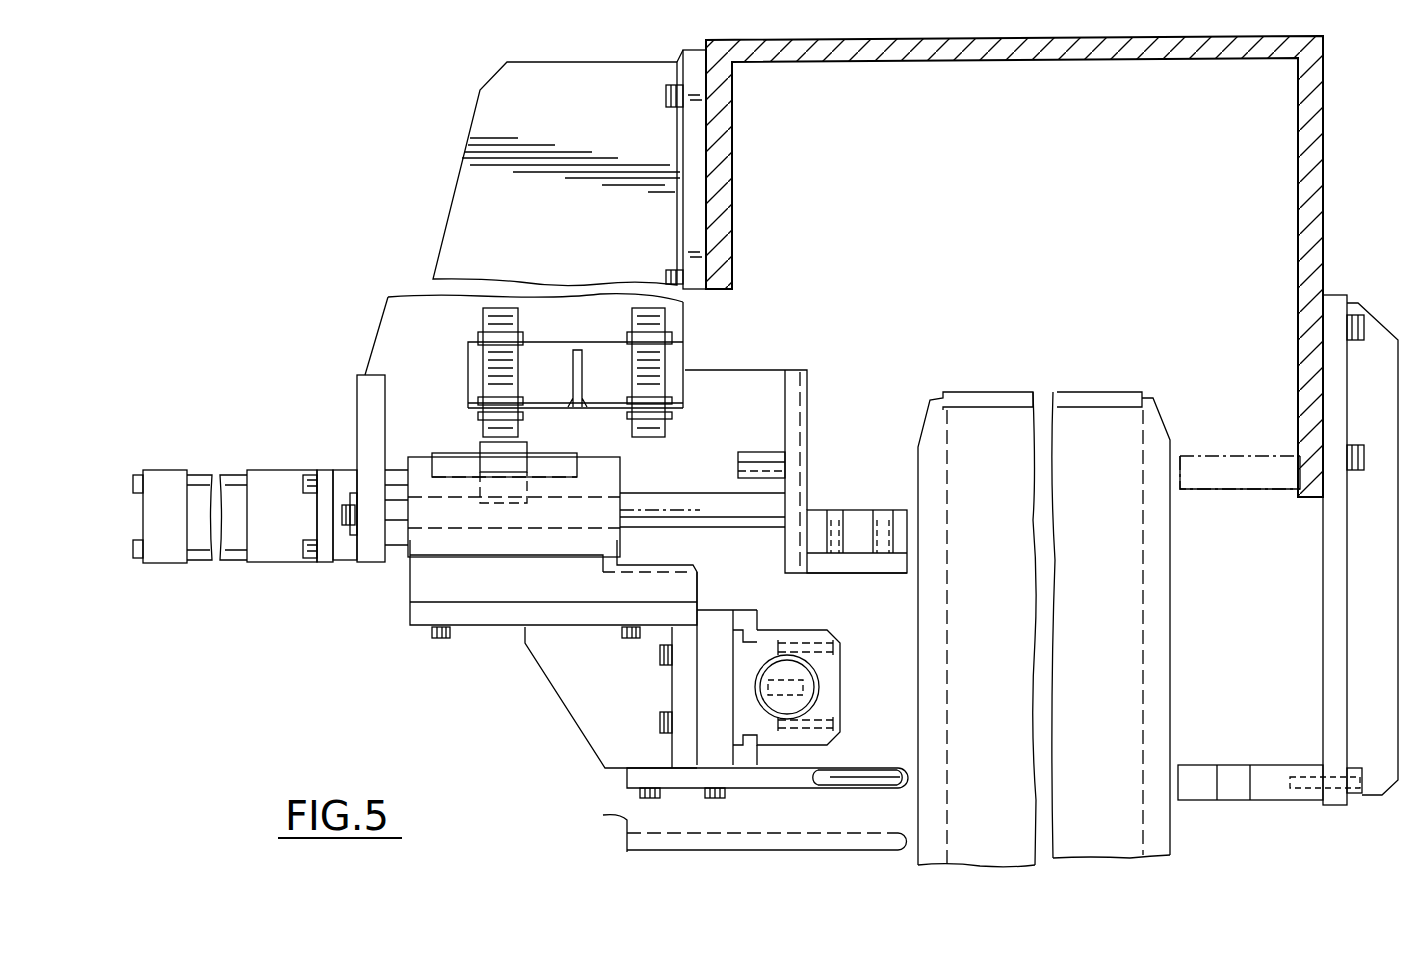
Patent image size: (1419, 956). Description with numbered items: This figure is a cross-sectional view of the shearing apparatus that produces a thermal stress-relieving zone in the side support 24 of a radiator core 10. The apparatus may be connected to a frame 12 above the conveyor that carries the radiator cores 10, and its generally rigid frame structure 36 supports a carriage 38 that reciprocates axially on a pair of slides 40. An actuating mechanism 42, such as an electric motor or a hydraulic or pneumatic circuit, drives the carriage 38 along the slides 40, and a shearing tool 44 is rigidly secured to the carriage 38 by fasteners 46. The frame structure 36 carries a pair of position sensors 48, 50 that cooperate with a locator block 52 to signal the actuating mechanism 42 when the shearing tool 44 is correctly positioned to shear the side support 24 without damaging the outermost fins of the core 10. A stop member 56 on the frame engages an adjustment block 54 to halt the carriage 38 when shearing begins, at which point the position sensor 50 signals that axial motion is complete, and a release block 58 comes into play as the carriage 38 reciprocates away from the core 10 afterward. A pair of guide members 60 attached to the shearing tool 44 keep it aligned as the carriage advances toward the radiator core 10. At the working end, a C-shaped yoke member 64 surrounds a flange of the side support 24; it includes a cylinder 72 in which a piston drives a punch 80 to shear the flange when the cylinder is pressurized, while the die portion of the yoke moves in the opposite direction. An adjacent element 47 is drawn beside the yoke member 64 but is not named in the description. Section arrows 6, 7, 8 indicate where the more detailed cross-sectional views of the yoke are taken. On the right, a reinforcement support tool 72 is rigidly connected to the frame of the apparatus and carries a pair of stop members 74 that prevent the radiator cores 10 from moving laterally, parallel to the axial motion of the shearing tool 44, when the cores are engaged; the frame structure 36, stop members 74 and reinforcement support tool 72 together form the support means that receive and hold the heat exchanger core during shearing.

The radiator core 10 is at (1086, 420).
The frame 12 is at (884, 70).
The side support 24 is at (935, 446).
The frame structure 36 is at (755, 375).
The carriage 38 is at (354, 497).
The slides 40 is at (712, 478).
The actuating mechanism 42 is at (278, 553).
The shearing tool 44 is at (556, 720).
The fasteners 46 is at (443, 643).
The block 47 is at (845, 728).
The position sensor 48 is at (480, 425).
The position sensor 50 is at (660, 432).
The locator block 52 is at (487, 450).
The adjustment block 54 is at (414, 466).
The stop member 56 is at (755, 460).
The release block 58 is at (852, 512).
The guide members 60 is at (627, 783).
The C-shaped yoke member 64 is at (850, 700).
The reinforcement support tool 72 is at (1381, 310).
The stop members 74 is at (1212, 453).
The punch 80 is at (781, 680).
The section line FIG. 6 is at (648, 628).
The section line FIG. 7 is at (897, 662).
The section line FIG. 8 is at (958, 623).